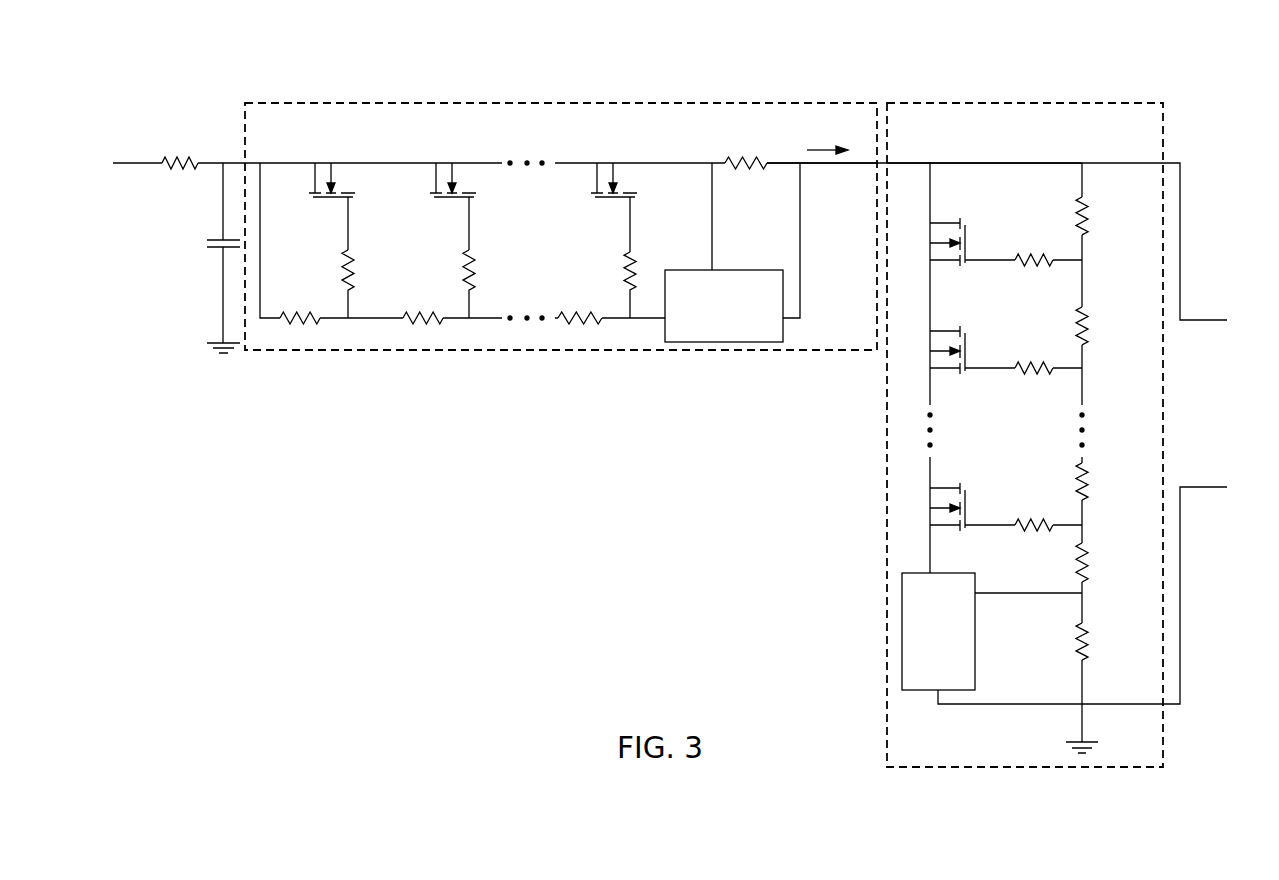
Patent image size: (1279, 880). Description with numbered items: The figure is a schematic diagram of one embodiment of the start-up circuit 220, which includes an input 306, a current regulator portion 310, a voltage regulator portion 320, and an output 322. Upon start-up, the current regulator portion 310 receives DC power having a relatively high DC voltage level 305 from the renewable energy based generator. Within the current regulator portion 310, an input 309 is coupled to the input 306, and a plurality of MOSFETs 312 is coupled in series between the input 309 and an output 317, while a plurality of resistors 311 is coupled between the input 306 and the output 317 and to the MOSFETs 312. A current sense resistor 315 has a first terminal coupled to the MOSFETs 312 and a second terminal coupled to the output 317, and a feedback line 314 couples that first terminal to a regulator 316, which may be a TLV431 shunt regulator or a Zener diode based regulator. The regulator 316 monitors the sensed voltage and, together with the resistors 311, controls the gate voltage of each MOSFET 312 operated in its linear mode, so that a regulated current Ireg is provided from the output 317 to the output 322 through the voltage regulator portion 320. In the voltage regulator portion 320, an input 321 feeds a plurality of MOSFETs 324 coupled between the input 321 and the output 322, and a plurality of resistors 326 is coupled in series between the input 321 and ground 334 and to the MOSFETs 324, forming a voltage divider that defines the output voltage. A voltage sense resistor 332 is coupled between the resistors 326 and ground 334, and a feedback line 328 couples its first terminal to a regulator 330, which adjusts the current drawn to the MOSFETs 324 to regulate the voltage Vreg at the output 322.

The start-up circuit 220 is at (1165, 70).
The DC voltage level (VInHv) 305 is at (90, 62).
The input 306 is at (143, 160).
The input 309 is at (290, 162).
The current regulator portion 310 is at (378, 102).
The plurality of resistors 311 is at (352, 256).
The plurality of MOSFETs 312 is at (472, 195).
The feedback line 314 is at (713, 216).
The current sense resistor 315 is at (730, 162).
The regulator 316 is at (785, 325).
The output 317 is at (836, 166).
The voltage regulator portion 320 is at (886, 724).
The input 321 is at (910, 162).
The output 322 is at (1208, 407).
The plurality of MOSFETs 324 is at (967, 265).
The plurality of resistors 326 is at (1025, 372).
The feedback line 328 is at (1024, 593).
The regulator 330 is at (975, 656).
The voltage sense resistor 332 is at (1085, 628).
The ground 334 is at (1082, 742).